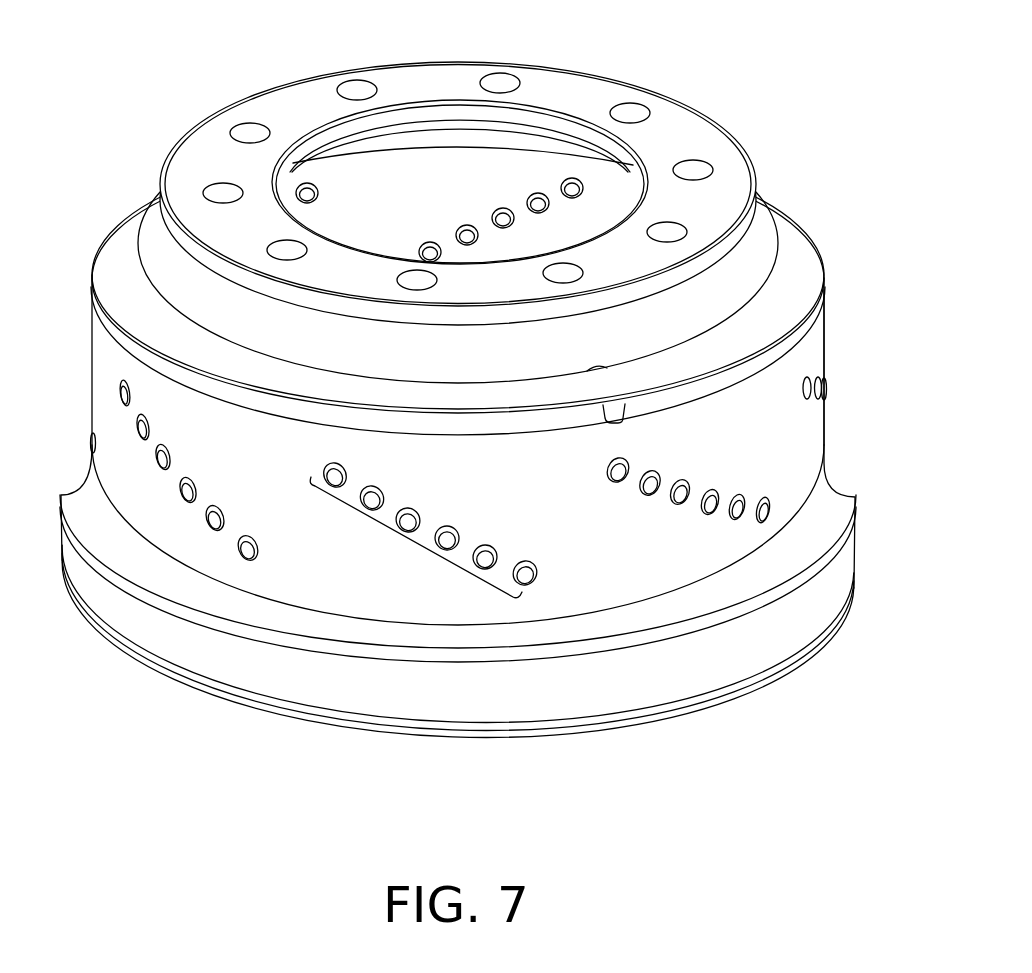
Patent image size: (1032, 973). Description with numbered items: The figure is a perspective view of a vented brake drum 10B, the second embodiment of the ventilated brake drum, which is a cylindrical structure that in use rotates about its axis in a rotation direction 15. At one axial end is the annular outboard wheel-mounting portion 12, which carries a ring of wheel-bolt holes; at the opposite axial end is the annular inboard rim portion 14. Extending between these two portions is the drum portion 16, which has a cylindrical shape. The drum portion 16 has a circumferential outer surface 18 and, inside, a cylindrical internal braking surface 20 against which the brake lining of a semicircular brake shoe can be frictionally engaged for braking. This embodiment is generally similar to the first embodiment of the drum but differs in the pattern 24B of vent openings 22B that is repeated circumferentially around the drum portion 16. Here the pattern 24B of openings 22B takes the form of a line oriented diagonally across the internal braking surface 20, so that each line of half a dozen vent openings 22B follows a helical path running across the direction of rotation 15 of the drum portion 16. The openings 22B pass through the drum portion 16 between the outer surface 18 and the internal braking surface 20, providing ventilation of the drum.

The vented brake drum 10B is at (820, 68).
The annular outboard wheel-mounting portion 12 is at (421, 77).
The annular inboard rim portion 14 is at (812, 604).
The rotation direction 15 is at (814, 425).
The drum portion 16 is at (828, 292).
The circumferential outer surface 18 is at (641, 560).
The cylindrical internal braking surface 20 is at (402, 221).
The vent opening 22B is at (413, 508).
The pattern of vent openings 24B is at (409, 539).